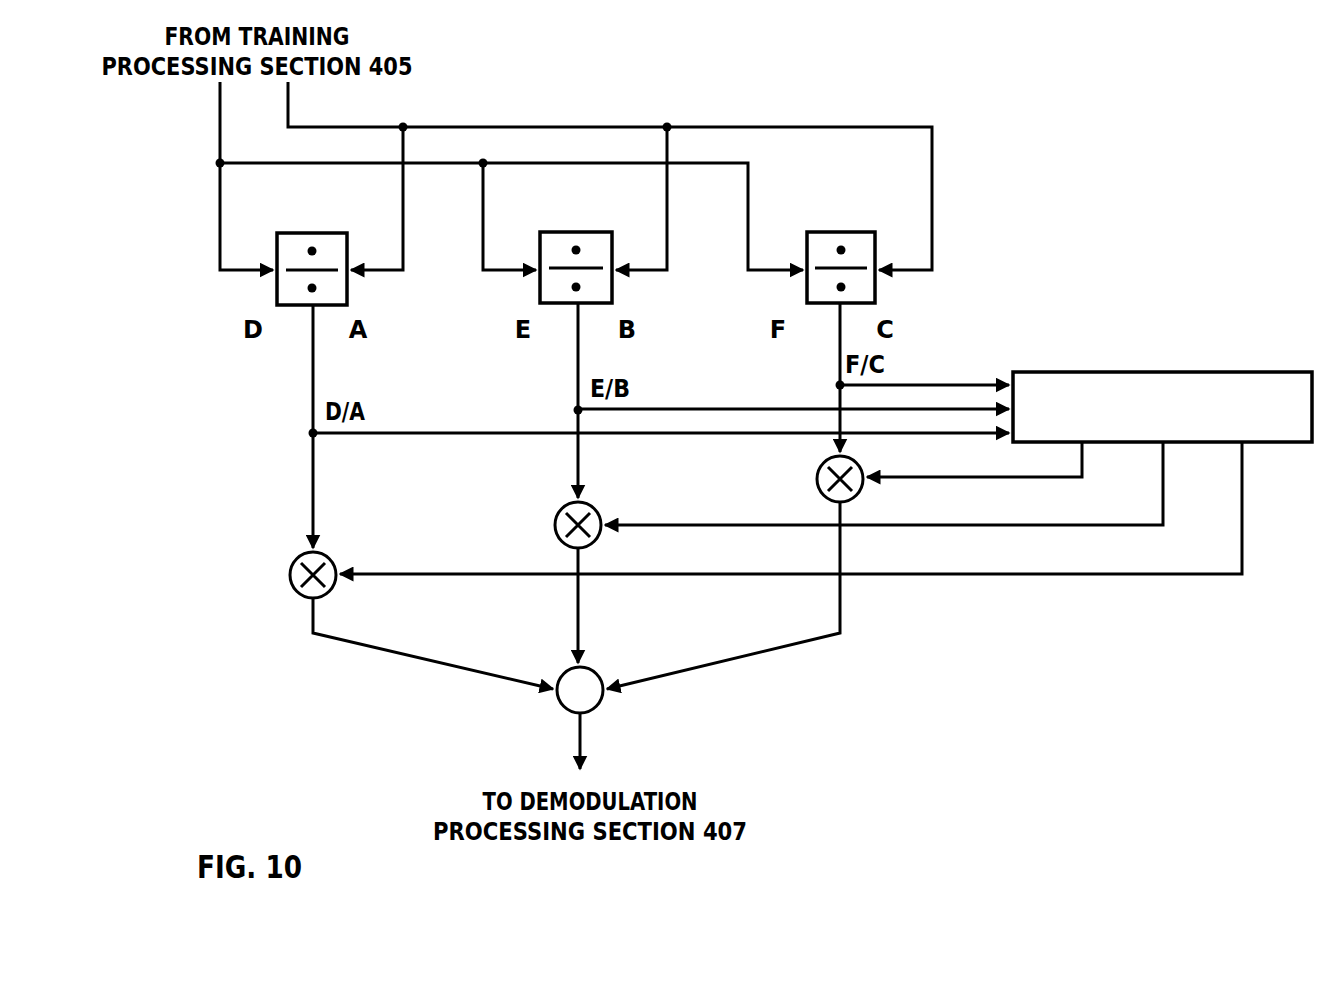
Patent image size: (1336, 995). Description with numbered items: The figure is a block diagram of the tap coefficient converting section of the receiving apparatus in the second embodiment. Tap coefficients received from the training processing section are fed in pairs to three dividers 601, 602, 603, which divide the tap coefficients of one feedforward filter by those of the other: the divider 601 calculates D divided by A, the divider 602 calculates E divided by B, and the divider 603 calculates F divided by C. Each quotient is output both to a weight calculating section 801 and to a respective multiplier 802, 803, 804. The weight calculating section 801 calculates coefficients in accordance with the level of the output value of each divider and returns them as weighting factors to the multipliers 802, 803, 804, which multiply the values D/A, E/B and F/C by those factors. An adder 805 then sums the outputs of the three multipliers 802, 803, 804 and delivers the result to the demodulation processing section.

The divider 601 is at (320, 232).
The divider 602 is at (583, 232).
The divider 603 is at (835, 232).
The weight calculating section 801 is at (1097, 372).
The multiplier 802 is at (290, 569).
The multiplier 803 is at (555, 520).
The multiplier 804 is at (817, 474).
The adder 805 is at (622, 656).